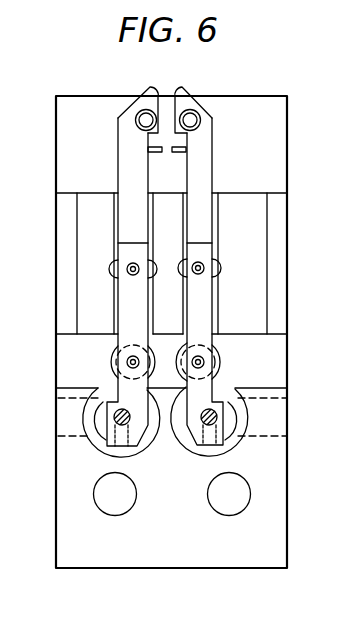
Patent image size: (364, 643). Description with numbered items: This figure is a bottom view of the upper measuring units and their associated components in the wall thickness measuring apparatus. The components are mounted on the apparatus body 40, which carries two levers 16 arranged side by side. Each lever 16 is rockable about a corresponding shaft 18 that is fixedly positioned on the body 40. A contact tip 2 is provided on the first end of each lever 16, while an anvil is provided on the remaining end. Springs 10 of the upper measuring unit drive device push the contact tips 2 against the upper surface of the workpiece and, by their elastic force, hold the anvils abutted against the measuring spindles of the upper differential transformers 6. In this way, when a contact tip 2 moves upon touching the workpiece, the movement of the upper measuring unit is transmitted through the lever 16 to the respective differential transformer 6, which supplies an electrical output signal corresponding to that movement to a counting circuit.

The wall thickness measuring apparatus body 40 is at (288, 156).
The lever 16 is at (128, 297).
The contact tip 2 is at (137, 119).
The shaft 18 is at (117, 262).
The spring 10 is at (122, 343).
The upper differential transformer 6 is at (100, 415).